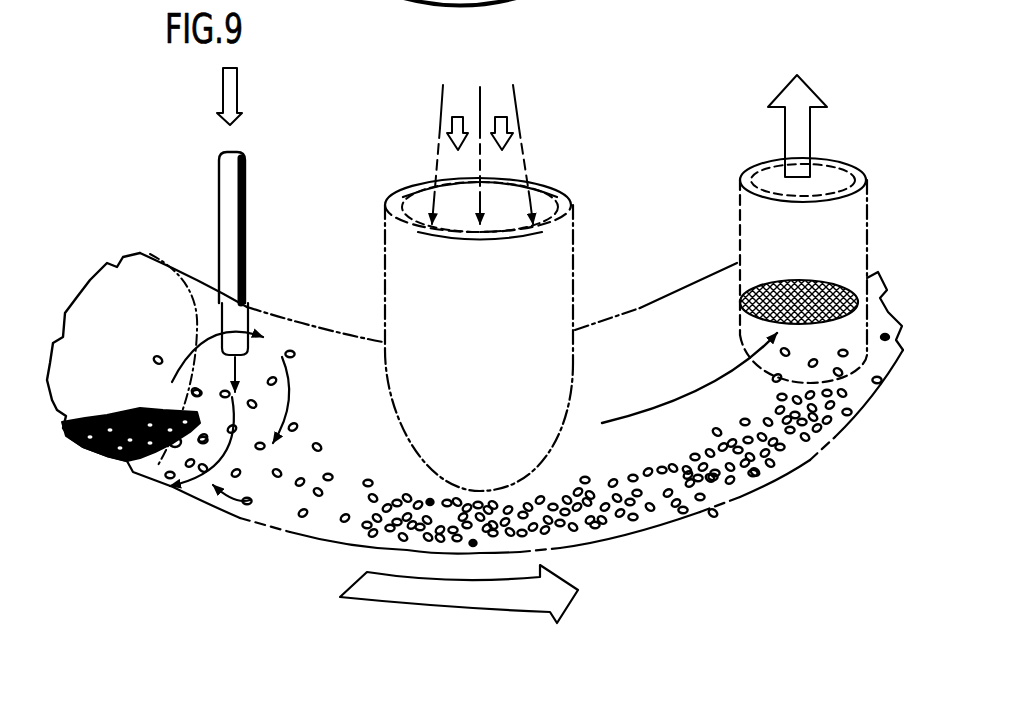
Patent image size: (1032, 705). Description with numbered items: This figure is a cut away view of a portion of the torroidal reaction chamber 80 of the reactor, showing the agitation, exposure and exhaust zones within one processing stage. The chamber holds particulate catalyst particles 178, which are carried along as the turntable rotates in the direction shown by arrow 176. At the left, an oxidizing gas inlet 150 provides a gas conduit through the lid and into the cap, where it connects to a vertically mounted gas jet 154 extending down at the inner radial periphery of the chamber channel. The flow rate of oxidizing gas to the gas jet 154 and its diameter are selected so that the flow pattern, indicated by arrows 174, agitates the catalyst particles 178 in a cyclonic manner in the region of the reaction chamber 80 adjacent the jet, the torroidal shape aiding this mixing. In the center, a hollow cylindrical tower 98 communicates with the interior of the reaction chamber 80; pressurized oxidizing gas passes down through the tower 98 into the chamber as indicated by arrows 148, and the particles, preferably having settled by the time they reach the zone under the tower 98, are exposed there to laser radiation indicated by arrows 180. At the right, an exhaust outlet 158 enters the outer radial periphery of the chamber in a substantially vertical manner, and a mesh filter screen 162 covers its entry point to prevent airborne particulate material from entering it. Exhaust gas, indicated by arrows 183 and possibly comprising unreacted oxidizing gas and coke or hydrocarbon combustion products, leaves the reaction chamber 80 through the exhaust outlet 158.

The torroidal reaction chamber 80 is at (133, 345).
The hollow cylindrical tower 98 is at (567, 203).
The arrows indicating oxidizing gas flow 148 is at (488, 54).
The oxidizing gas inlet 150 is at (233, 184).
The gas jet 154 is at (253, 310).
The exhaust outlet 158 is at (742, 176).
The mesh filter screen 162 is at (795, 282).
The arrows indicating flow pattern 174 is at (305, 400).
The arrow indicating direction of turntable rotation 176 is at (459, 594).
The catalyst particles 178 is at (700, 502).
The arrows indicating laser radiation 180 is at (451, 130).
The arrows indicating exhaust gas 183 is at (689, 378).